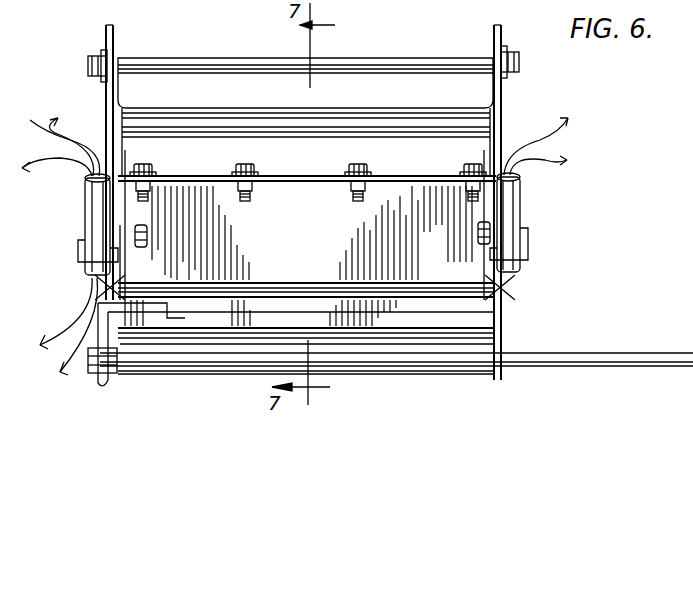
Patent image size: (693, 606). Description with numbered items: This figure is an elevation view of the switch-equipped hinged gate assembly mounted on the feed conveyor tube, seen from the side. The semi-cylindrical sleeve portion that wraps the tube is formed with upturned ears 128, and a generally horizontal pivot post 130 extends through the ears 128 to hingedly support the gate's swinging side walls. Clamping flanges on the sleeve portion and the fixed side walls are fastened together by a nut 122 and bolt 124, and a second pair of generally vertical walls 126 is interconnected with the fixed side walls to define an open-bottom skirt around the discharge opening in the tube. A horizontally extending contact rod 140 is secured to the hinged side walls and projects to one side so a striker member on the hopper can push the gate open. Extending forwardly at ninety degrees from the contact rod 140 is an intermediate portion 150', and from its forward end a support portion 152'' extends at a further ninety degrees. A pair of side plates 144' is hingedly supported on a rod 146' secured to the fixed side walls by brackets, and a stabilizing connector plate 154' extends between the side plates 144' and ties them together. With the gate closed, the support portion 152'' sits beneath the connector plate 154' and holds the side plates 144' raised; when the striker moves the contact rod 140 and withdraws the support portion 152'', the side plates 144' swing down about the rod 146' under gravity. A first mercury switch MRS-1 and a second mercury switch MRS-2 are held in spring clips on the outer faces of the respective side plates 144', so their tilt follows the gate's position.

The upturned ears 128 is at (118, 38).
The pivot post 130 is at (200, 58).
The nut 122 is at (238, 185).
The bolt 124 is at (242, 170).
The second pair of generally vertical walls 126 is at (323, 243).
The side plates 144' is at (305, 225).
The rod 146' is at (306, 273).
The intermediate portion 150' is at (68, 332).
The support portion 152'' is at (296, 323).
The stabilizing connector plate 154' is at (306, 315).
The contact rod 140 is at (605, 366).
The first mercury switch MRS-1 is at (516, 204).
The second mercury switch MRS-2 is at (94, 222).